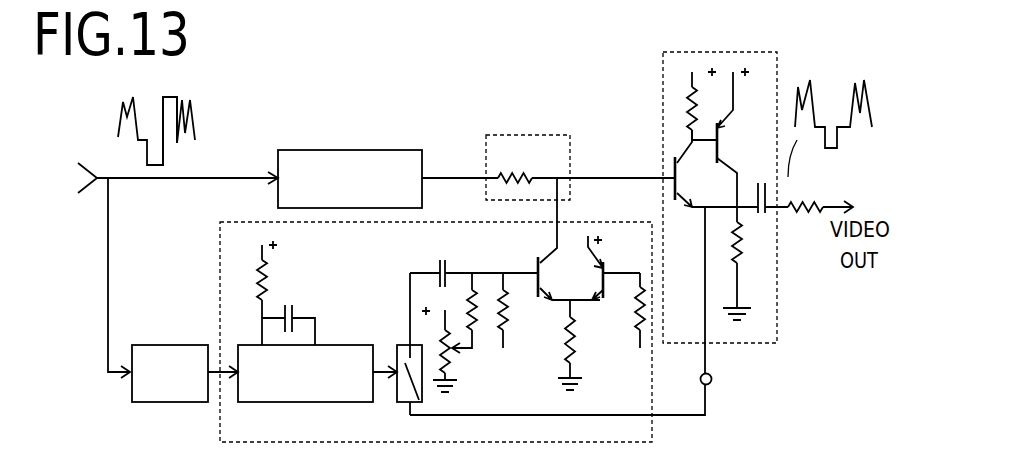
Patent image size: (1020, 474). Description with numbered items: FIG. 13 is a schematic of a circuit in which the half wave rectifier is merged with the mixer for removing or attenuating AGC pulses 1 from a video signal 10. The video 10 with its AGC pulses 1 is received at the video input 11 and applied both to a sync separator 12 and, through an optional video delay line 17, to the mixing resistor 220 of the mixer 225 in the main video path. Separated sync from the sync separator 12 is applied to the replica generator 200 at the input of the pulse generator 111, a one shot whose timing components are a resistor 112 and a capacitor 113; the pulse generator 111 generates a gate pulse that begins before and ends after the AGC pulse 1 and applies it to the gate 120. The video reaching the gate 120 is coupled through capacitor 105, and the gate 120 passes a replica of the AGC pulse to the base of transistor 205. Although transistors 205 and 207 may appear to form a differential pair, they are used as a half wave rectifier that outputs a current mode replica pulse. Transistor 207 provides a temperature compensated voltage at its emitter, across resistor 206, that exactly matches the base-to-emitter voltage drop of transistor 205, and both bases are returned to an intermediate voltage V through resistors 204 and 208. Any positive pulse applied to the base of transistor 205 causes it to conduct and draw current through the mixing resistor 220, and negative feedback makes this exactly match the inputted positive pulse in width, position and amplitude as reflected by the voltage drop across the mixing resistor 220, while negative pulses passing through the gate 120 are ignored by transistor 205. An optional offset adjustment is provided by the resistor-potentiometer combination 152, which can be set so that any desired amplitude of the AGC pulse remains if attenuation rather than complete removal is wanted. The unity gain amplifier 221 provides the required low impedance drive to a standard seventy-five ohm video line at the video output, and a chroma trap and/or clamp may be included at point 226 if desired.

The AGC pulses 1 is at (165, 72).
The video 10 is at (207, 115).
The video input 11 is at (102, 190).
The sync separator 12 is at (150, 330).
The video delay line 17 is at (327, 142).
The capacitor 105 is at (474, 260).
The pulse generator 111 is at (282, 410).
The resistor 112 is at (281, 293).
The capacitor 113 is at (296, 317).
The gate 120 is at (397, 400).
The resistor-potentiometer combination 152 is at (486, 352).
The replica generator 200 is at (213, 243).
The resistor 204 is at (523, 322).
The transistor 205 is at (533, 258).
The resistor 206 is at (582, 348).
The transistor 207 is at (614, 268).
The resistor 208 is at (621, 322).
The mixing resistor 220 is at (518, 165).
The unity gain amplifier 221 is at (655, 115).
The mixer 225 is at (525, 127).
The point 226 is at (712, 385).